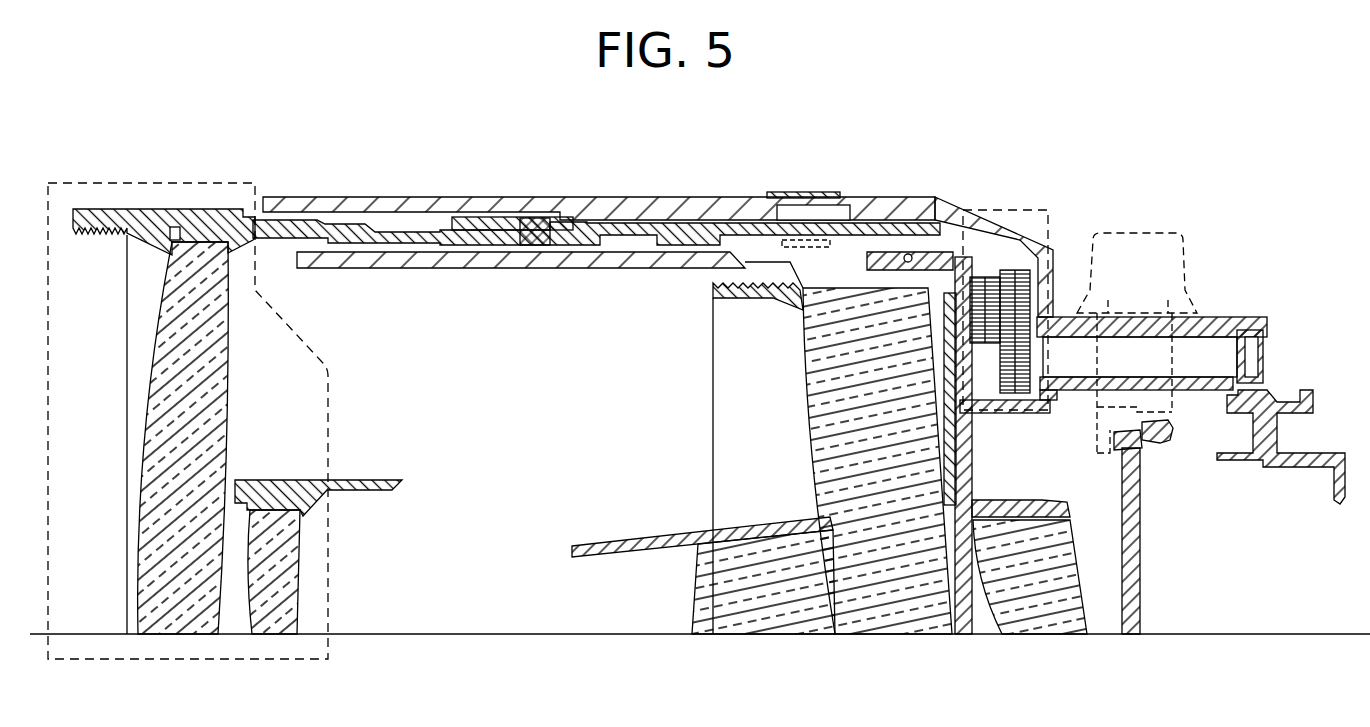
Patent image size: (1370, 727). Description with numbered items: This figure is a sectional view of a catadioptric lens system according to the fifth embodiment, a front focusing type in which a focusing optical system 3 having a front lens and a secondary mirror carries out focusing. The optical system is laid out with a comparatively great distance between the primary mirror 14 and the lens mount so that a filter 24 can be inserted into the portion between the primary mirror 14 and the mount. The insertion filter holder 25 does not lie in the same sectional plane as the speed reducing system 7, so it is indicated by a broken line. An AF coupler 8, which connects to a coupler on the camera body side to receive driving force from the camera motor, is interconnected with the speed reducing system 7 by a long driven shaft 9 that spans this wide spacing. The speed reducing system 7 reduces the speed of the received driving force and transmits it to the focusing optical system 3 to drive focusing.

The focusing optical system 3 is at (199, 193).
The speed reducing system 7 is at (1038, 208).
The insertion filter holder 25 is at (1148, 240).
The driven shaft 9 is at (1208, 357).
The AF coupler 8 is at (1262, 350).
The primary mirror 14 is at (955, 587).
The filter 24 is at (1140, 603).